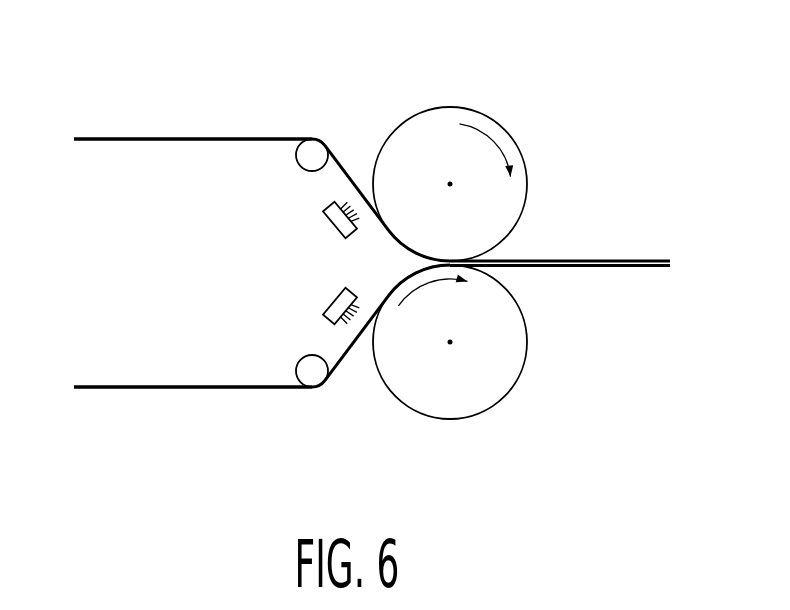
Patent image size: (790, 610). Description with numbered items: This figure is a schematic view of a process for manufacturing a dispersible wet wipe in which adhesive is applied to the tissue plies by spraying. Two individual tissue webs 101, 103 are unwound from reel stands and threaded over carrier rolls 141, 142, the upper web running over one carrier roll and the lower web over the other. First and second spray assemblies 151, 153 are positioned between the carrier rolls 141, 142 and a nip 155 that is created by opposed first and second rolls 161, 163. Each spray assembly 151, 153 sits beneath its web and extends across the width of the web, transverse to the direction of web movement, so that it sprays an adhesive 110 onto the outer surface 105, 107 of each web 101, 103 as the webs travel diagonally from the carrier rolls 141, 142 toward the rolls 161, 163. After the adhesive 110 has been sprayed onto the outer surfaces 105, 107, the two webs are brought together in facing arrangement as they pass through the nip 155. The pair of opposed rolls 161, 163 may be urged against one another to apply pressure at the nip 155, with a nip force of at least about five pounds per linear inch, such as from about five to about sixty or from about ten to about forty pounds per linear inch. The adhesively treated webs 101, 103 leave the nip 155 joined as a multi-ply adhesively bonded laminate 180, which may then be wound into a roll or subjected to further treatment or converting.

The tissue web 101 is at (149, 126).
The outer surface 105 is at (182, 156).
The outer surface 107 is at (112, 368).
The tissue web 103 is at (211, 406).
The adhesive 110 is at (345, 196).
The carrier roll 141 is at (312, 155).
The carrier roll 142 is at (312, 376).
The first spray assembly 151 is at (328, 219).
The second spray assembly 153 is at (328, 314).
The nip 155 is at (392, 263).
The first roll 161 is at (448, 123).
The second roll 163 is at (513, 353).
The multi-ply adhesively bonded laminate 180 is at (647, 295).